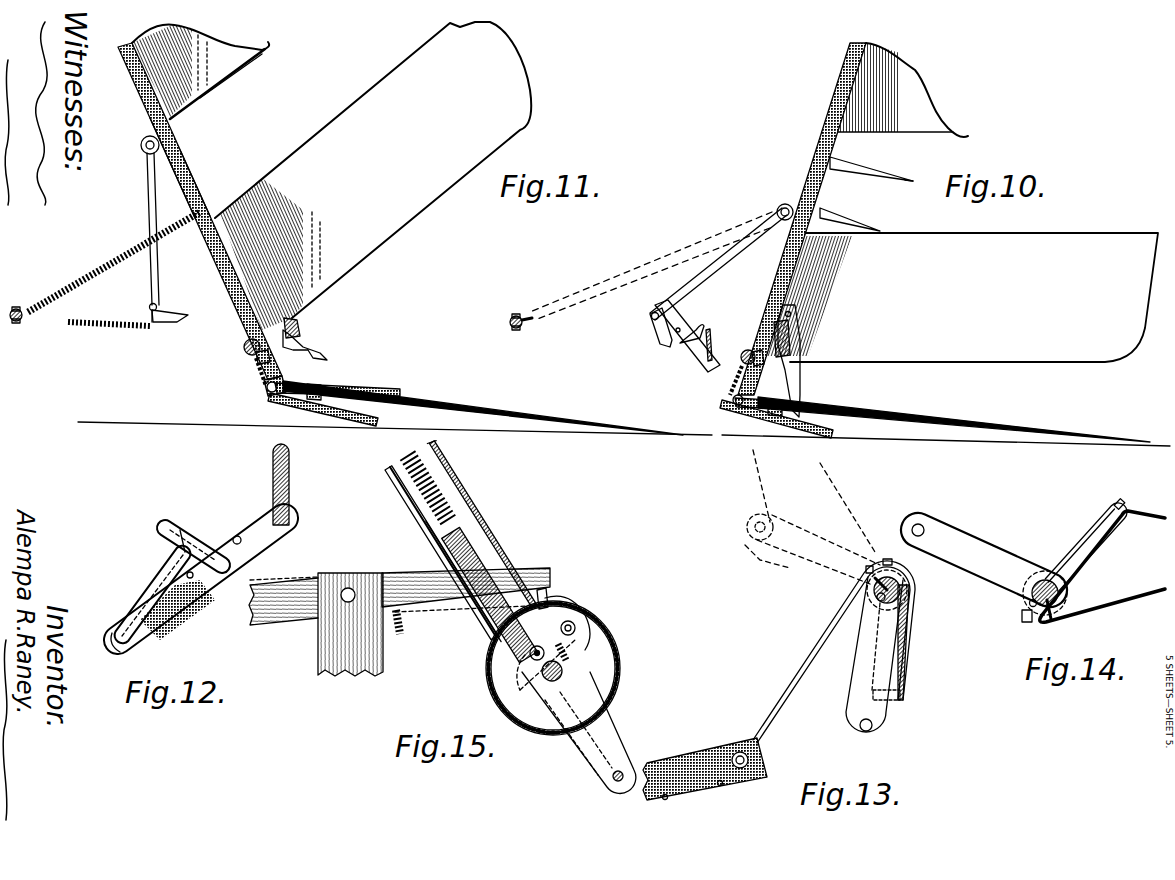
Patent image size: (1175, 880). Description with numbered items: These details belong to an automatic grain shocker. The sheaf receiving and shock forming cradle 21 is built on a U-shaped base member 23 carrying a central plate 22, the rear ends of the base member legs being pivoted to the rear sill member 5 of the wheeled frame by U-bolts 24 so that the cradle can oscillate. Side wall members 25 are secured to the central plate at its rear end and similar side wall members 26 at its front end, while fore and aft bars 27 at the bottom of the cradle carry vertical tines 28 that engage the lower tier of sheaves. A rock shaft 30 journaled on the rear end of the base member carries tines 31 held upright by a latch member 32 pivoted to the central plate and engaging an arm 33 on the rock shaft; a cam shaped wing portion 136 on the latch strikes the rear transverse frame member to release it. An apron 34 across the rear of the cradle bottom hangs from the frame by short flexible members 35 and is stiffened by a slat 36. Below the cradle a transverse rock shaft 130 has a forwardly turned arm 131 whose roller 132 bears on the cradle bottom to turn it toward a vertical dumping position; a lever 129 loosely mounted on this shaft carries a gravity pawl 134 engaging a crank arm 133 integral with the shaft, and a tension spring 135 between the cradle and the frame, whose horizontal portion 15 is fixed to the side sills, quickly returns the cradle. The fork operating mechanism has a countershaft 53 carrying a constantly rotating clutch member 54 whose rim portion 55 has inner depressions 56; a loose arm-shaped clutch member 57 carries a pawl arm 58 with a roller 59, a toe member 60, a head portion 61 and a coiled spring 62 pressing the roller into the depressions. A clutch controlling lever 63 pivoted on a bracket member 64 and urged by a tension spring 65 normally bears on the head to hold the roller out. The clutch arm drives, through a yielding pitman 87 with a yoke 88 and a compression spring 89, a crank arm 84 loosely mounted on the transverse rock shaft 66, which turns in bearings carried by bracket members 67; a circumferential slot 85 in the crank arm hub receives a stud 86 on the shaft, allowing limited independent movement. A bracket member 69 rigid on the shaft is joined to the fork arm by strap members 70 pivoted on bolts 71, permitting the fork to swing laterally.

In FIG. 11, the rear sill member 5 is at (245, 342).
In FIG. 10, the rear sill member 5 is at (741, 361).
In FIG. 11, the horizontal portion 15 is at (23, 318).
In FIG. 10, the horizontal portion 15 is at (510, 323).
In FIG. 11, the sheaf receiving and shock forming cradle 21 is at (210, 200).
In FIG. 10, the sheaf receiving and shock forming cradle 21 is at (864, 223).
In FIG. 10, the central plate 22 is at (828, 184).
In FIG. 11, the U-shaped base member 23 is at (228, 272).
In FIG. 10, the U-shaped base member 23 is at (782, 266).
In FIG. 11, the U-bolts 24 is at (255, 357).
In FIG. 10, the U-bolts 24 is at (748, 350).
In FIG. 11, the side wall members 25 is at (413, 213).
In FIG. 10, the side wall members 25 is at (1040, 363).
In FIG. 11, the side wall members 26 is at (203, 83).
In FIG. 10, the side wall members 26 is at (905, 134).
In FIG. 11, the bars 27 is at (187, 152).
In FIG. 10, the tines 28 is at (889, 183).
In FIG. 11, the rock shaft 30 is at (266, 392).
In FIG. 10, the rock shaft 30 is at (730, 399).
In FIG. 11, the tines 31 is at (458, 402).
In FIG. 10, the tines 31 is at (935, 418).
In FIG. 11, the latch member 32 is at (305, 344).
In FIG. 10, the latch member 32 is at (800, 385).
In FIG. 11, the arm 33 is at (318, 383).
In FIG. 10, the arm 33 is at (760, 410).
In FIG. 11, the apron 34 is at (378, 420).
In FIG. 10, the apron 34 is at (834, 433).
In FIG. 11, the flexible members 35 is at (258, 378).
In FIG. 10, the flexible members 35 is at (732, 381).
In FIG. 11, the slat 36 is at (338, 386).
In FIG. 10, the slat 36 is at (765, 410).
In FIG. 15, the countershaft 53 is at (570, 680).
In FIG. 15, the constantly rotating clutch member 54 is at (563, 672).
In FIG. 15, the rim portion 55 is at (578, 647).
In FIG. 15, the depressions 56 is at (502, 688).
In FIG. 15, the clutch member 57 is at (622, 731).
In FIG. 15, the pawl arm 58 is at (562, 603).
In FIG. 15, the roller 59 is at (582, 622).
In FIG. 15, the toe member 60 is at (505, 678).
In FIG. 15, the head portion 61 is at (548, 590).
In FIG. 15, the coiled spring 62 is at (587, 653).
In FIG. 15, the clutch controlling lever 63 is at (410, 573).
In FIG. 15, the bracket member 64 is at (320, 645).
In FIG. 15, the tension spring 65 is at (406, 630).
In FIG. 13, the transverse rock shaft 66 is at (864, 597).
In FIG. 14, the transverse rock shaft 66 is at (1029, 602).
In FIG. 13, the bracket members 67 is at (712, 746).
In FIG. 13, the bracket member 69 is at (907, 651).
In FIG. 14, the bracket member 69 is at (1077, 538).
In FIG. 13, the strap members 70 is at (785, 699).
In FIG. 14, the strap members 70 is at (1152, 523).
In FIG. 13, the bolts 71 is at (882, 563).
In FIG. 14, the bolts 71 is at (1099, 511).
In FIG. 13, the crank arm 84 is at (860, 669).
In FIG. 14, the crank arm 84 is at (984, 560).
In FIG. 13, the circumferential slot 85 is at (910, 586).
In FIG. 14, the circumferential slot 85 is at (1068, 592).
In FIG. 13, the stud 86 is at (866, 573).
In FIG. 14, the stud 86 is at (1053, 621).
In FIG. 15, the pitman 87 is at (478, 505).
In FIG. 15, the yoke 88 is at (465, 490).
In FIG. 15, the compression spring 89 is at (392, 492).
In FIG. 10, the lever 129 is at (700, 352).
In FIG. 12, the lever 129 is at (256, 528).
In FIG. 11, the rock shaft 130 is at (149, 306).
In FIG. 10, the rock shaft 130 is at (654, 311).
In FIG. 12, the rock shaft 130 is at (118, 646).
In FIG. 11, the forwardly turned arm 131 is at (147, 206).
In FIG. 10, the forwardly turned arm 131 is at (730, 270).
In FIG. 11, the roller 132 is at (143, 152).
In FIG. 10, the roller 132 is at (778, 207).
In FIG. 11, the crank arm 133 is at (177, 324).
In FIG. 10, the crank arm 133 is at (655, 336).
In FIG. 12, the crank arm 133 is at (152, 585).
In FIG. 10, the gravity pawl 134 is at (708, 329).
In FIG. 12, the gravity pawl 134 is at (171, 530).
In FIG. 11, the tension spring 135 is at (102, 268).
In FIG. 10, the tension spring 135 is at (560, 306).
In FIG. 11, the cam shaped wing portion 136 is at (291, 326).
In FIG. 10, the cam shaped wing portion 136 is at (800, 350).